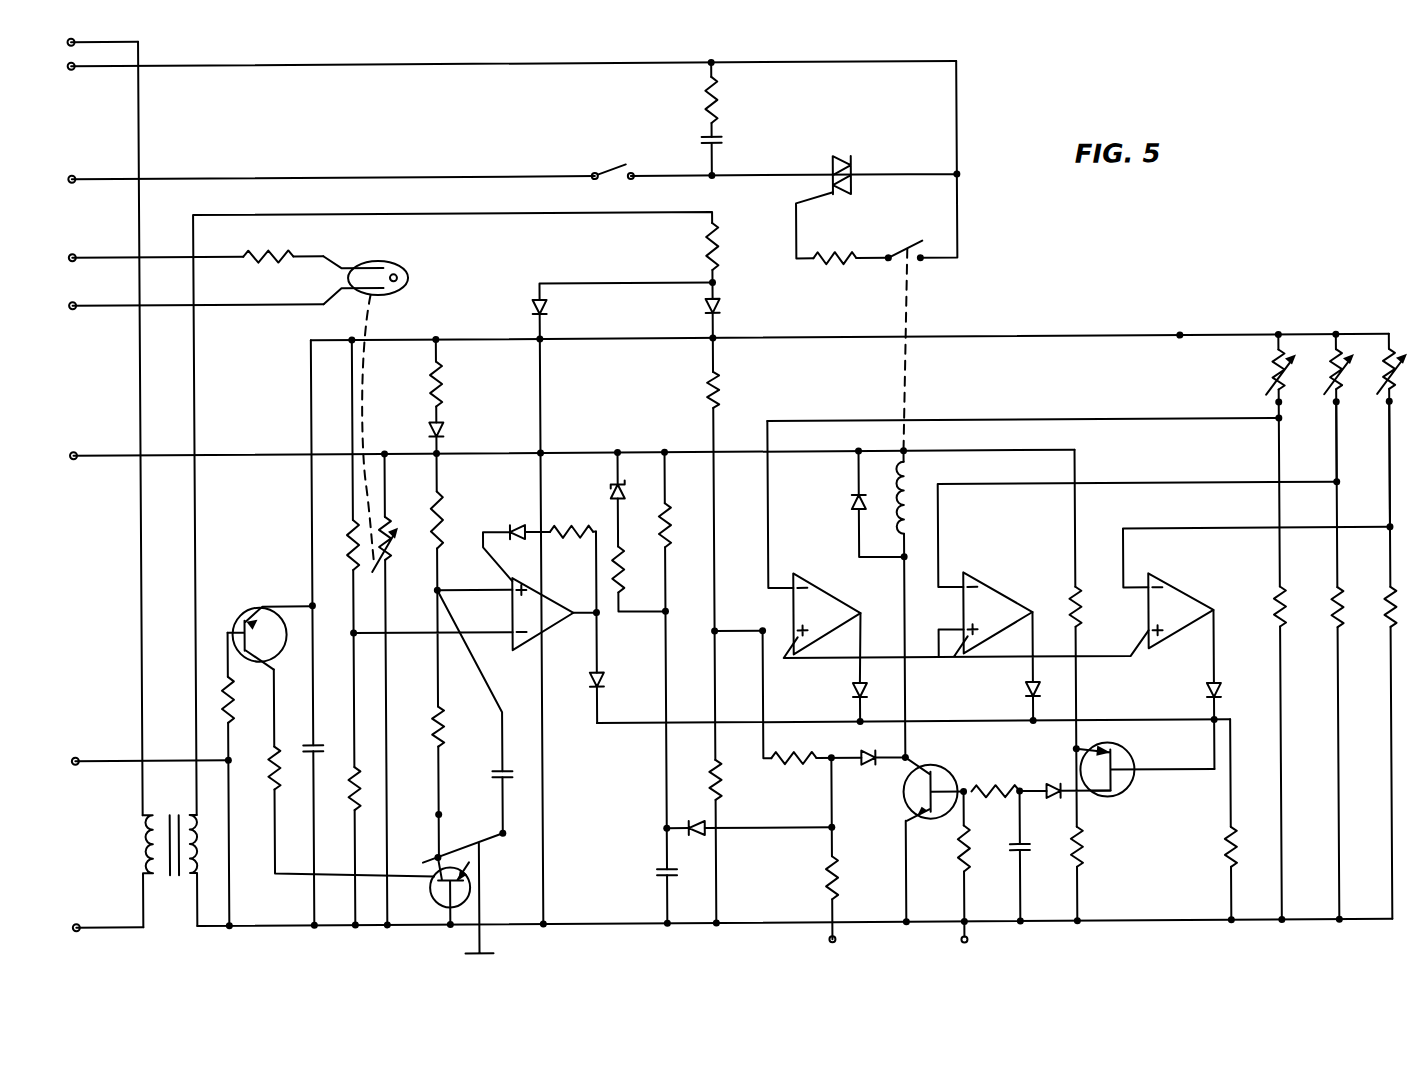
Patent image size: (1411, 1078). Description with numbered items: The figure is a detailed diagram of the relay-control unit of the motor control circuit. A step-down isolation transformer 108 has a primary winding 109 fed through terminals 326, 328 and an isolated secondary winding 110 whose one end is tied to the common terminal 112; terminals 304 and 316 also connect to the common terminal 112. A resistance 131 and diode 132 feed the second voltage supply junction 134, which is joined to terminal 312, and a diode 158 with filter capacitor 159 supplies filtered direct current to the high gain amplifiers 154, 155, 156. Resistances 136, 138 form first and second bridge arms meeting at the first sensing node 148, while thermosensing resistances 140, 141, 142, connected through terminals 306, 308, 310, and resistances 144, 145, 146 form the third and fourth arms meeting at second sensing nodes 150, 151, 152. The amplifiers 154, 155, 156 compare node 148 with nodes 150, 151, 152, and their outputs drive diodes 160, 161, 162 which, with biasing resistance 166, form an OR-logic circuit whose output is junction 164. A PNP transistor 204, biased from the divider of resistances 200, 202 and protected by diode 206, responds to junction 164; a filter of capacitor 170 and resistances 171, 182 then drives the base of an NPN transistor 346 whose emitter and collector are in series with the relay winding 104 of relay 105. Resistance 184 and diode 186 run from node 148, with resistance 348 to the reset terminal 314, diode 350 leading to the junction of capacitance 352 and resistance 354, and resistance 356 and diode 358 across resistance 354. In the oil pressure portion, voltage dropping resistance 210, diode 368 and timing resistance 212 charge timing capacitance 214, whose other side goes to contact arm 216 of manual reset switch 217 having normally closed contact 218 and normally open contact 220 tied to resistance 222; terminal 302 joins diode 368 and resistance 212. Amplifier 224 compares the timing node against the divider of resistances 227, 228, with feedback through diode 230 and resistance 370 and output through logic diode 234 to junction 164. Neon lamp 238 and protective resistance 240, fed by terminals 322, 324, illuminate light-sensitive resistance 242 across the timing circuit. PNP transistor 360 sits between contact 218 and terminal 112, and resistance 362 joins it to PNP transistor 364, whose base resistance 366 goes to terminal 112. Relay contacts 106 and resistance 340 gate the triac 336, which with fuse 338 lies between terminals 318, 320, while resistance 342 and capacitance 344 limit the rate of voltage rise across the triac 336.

The relay winding 104 is at (913, 488).
The relay 105 is at (909, 236).
The relay contacts 106 is at (914, 264).
The transformer 108 is at (176, 884).
The primary winding 109 is at (143, 843).
The secondary winding 110 is at (197, 816).
The common terminal 112 is at (1120, 926).
The resistance 131 is at (720, 240).
The diode 132 is at (721, 308).
The second voltage supply junction 134 is at (1015, 337).
The resistance 136 is at (721, 380).
The resistance 138 is at (722, 785).
The thermosensing resistance 140 is at (1262, 356).
The thermosensing resistance 141 is at (1320, 356).
The thermosensing resistance 142 is at (1380, 356).
The resistance 144 is at (1273, 596).
The resistance 145 is at (1330, 596).
The resistance 146 is at (1383, 596).
The first sensing node 148 is at (715, 624).
The second sensing node 150 is at (1279, 446).
The second sensing node 151 is at (1337, 480).
The second sensing node 152 is at (1390, 496).
The high gain amplifier 154 is at (838, 608).
The high gain amplifier 155 is at (1008, 608).
The high gain amplifier 156 is at (1188, 590).
The diode 158 is at (548, 306).
The filter capacitor 159 is at (321, 744).
The diode 160 is at (851, 691).
The diode 161 is at (1024, 691).
The diode 162 is at (1205, 693).
The junction 164 is at (927, 716).
The biasing resistance 166 is at (1224, 836).
The capacitor 170 is at (1030, 855).
The resistance 171 is at (984, 788).
The bias resistance 182 is at (972, 850).
The resistance 184 is at (773, 737).
The diode 186 is at (858, 766).
The resistance 200 is at (1080, 602).
The resistance 202 is at (1082, 852).
The PNP transistor 204 is at (1124, 758).
The diode 206 is at (1050, 786).
The voltage dropping resistance 210 is at (443, 378).
The timing resistance 212 is at (443, 516).
The timing capacitance 214 is at (511, 772).
The contact arm 216 is at (437, 850).
The manual reset switch 217 is at (486, 847).
The normally closed contact 218 is at (423, 863).
The normally open contact 220 is at (470, 814).
The resistance 222 is at (441, 712).
The high gain amplifier 224 is at (550, 612).
The resistance 227 is at (347, 540).
The resistance 228 is at (360, 776).
The feedback diode 230 is at (527, 520).
The logic diode 234 is at (603, 682).
The neon lamp 238 is at (404, 262).
The protective resistance 240 is at (285, 250).
The light-sensitive resistance 242 is at (386, 564).
The terminal 302 is at (70, 452).
The terminal 304 is at (74, 754).
The terminal 306 is at (1277, 405).
The terminal 308 is at (1335, 407).
The terminal 310 is at (1388, 407).
The terminal 312 is at (1181, 336).
The terminal 314 is at (834, 940).
The terminal 316 is at (965, 940).
The terminal 318 is at (74, 66).
The terminal 320 is at (74, 172).
The terminal 322 is at (74, 251).
The terminal 324 is at (74, 306).
The terminal 326 is at (74, 42).
The terminal 328 is at (72, 924).
The triac 336 is at (843, 160).
The fuse 338 is at (626, 170).
The resistance 340 is at (831, 254).
The resistance 342 is at (721, 88).
The capacitance 344 is at (724, 146).
The NPN transistor 346 is at (941, 768).
The resistance 348 is at (838, 868).
The diode 350 is at (698, 836).
The capacitance 352 is at (655, 871).
The resistance 354 is at (672, 536).
The resistance 356 is at (630, 586).
The diode 358 is at (627, 493).
The PNP transistor 360 is at (436, 897).
The resistance 362 is at (270, 798).
The PNP transistor 364 is at (244, 616).
The resistance 366 is at (222, 684).
The diode 368 is at (445, 430).
The resistance 370 is at (566, 527).